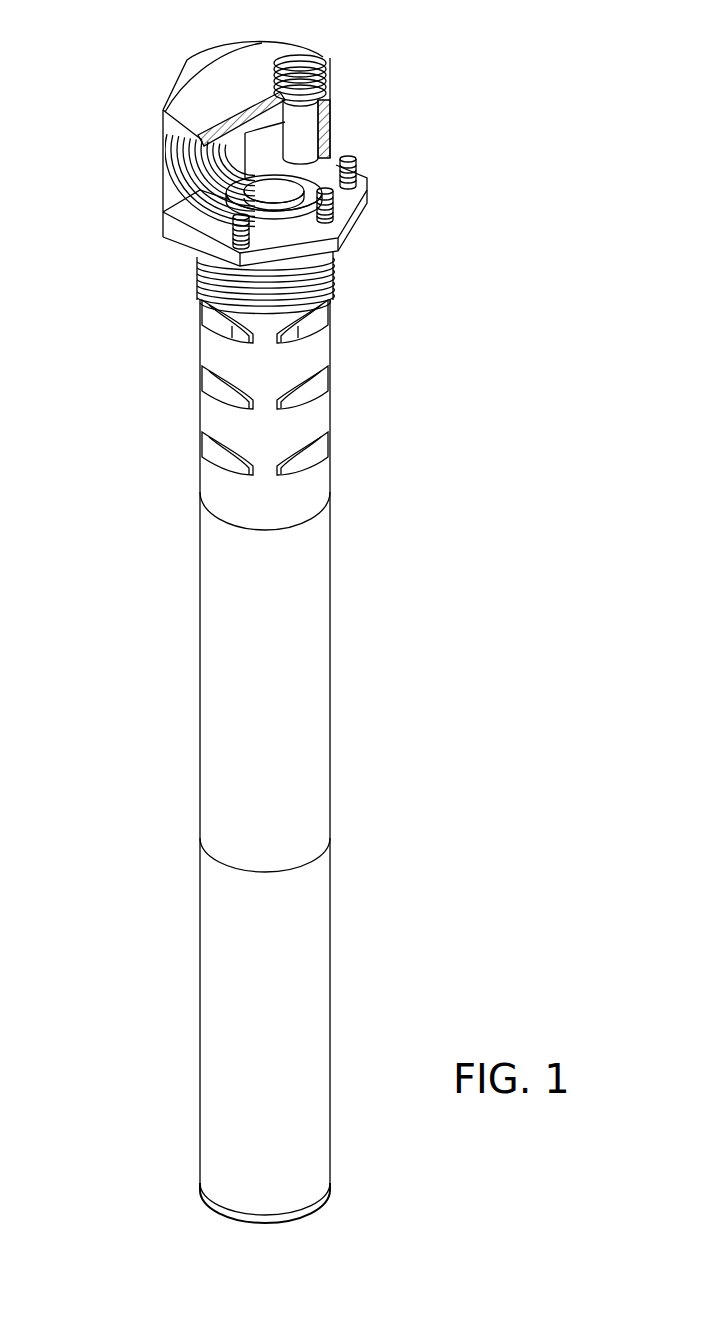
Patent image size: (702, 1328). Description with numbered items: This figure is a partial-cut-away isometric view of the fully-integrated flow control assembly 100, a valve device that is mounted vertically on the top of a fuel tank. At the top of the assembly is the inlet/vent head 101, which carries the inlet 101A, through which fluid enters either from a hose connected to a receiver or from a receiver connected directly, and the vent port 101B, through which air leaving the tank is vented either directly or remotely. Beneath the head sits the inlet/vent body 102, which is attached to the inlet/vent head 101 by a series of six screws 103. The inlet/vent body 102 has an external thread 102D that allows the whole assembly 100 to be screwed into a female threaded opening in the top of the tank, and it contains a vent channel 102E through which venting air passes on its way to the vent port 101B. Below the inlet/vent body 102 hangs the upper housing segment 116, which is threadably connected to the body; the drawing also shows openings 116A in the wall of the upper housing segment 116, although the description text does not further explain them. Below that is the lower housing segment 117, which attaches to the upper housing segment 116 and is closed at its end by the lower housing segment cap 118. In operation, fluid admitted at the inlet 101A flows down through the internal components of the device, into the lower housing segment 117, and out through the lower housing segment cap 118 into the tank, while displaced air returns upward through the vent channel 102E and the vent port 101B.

The fully-integrated flow control assembly 100 is at (116, 58).
The inlet/vent head 101 is at (177, 130).
The inlet 101A is at (172, 181).
The vent port 101B is at (324, 52).
The inlet/vent body 102 is at (183, 233).
The external thread 102D is at (188, 277).
The vent channel 102E is at (322, 168).
The screws 103 is at (368, 165).
The upper housing segment 116 is at (208, 352).
The slot 116A is at (196, 322).
The lower housing segment 117 is at (212, 735).
The lower housing segment cap 118 is at (205, 1200).